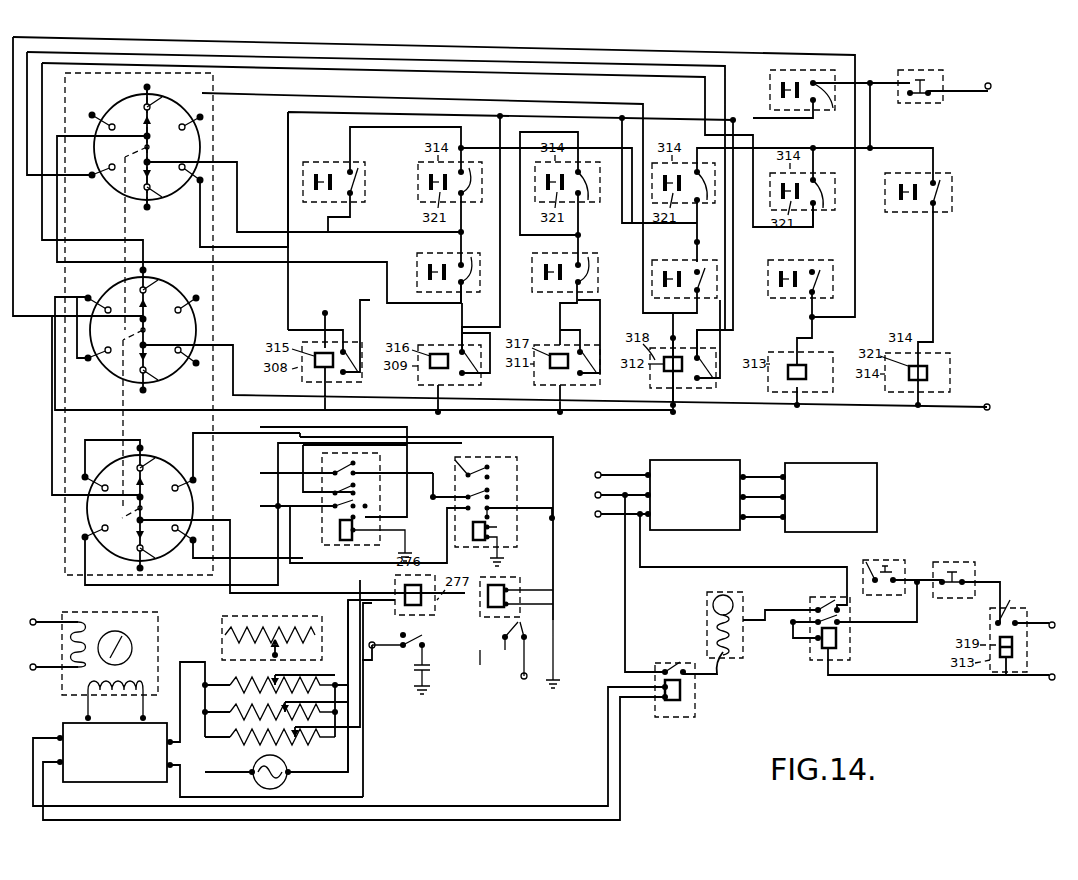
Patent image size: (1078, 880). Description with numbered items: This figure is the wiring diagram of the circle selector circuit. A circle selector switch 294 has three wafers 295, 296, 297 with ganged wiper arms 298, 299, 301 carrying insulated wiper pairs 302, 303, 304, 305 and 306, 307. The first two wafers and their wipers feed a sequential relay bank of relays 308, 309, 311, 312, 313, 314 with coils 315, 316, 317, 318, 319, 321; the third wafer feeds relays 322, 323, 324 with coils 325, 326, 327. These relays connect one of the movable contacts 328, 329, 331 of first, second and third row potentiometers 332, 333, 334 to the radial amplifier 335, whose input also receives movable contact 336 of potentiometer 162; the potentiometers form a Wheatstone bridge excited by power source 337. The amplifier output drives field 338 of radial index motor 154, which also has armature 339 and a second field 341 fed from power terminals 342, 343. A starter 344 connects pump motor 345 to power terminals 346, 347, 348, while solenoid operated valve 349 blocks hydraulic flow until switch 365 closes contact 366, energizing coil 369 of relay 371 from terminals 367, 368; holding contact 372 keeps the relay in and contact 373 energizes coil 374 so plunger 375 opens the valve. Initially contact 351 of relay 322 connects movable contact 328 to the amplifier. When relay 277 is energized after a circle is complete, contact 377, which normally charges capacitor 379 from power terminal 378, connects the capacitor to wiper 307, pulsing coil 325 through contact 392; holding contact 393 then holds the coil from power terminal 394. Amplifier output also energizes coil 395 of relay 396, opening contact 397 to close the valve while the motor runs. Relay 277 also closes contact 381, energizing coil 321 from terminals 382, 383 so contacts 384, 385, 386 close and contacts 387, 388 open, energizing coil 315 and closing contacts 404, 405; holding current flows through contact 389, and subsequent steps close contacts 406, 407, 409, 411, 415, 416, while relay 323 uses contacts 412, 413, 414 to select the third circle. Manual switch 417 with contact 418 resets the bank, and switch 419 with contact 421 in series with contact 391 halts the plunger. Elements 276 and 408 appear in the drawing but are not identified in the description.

The radial index motor 154 is at (62, 676).
The potentiometer 162 is at (222, 620).
The relay coil 276 is at (908, 208).
The relay 277 is at (938, 212).
The circle selector switch 294 is at (56, 526).
The wafer 295 is at (125, 106).
The wafer 296 is at (112, 290).
The wafer 297 is at (110, 470).
The wiper arm 298 is at (150, 148).
The wiper arm 299 is at (147, 331).
The wiper arm 301 is at (144, 508).
The wiper 302 is at (150, 130).
The wiper 303 is at (150, 172).
The wiper 304 is at (147, 314).
The wiper 305 is at (147, 352).
The wiper 306 is at (144, 492).
The wiper 307 is at (143, 527).
The relay 308 is at (466, 292).
The relay 309 is at (587, 292).
The relay 311 is at (703, 298).
The relay 312 is at (818, 268).
The relay 313 is at (780, 71).
The relay 314 is at (323, 162).
The coil 315 is at (437, 262).
The coil 316 is at (553, 262).
The coil 317 is at (672, 268).
The coil 318 is at (788, 298).
The coil 319 is at (792, 362).
The coil 321 is at (323, 192).
The relay 322 is at (325, 534).
The relay 323 is at (515, 533).
The relay 324 is at (504, 652).
The coil 325 is at (348, 540).
The coil 326 is at (475, 541).
The coil 327 is at (510, 584).
The movable contact 328 is at (270, 676).
The movable contact 329 is at (285, 704).
The movable contact 331 is at (295, 730).
The first row potentiometer 332 is at (285, 686).
The second row potentiometer 333 is at (295, 712).
The third row potentiometer 334 is at (300, 739).
The radial amplifier 335 is at (112, 782).
The movable contact 336 is at (270, 646).
The power source 337 is at (255, 762).
The field 338 is at (115, 701).
The armature 339 is at (133, 648).
The second field 341 is at (95, 638).
The power terminal 342 is at (33, 618).
The power terminal 343 is at (49, 655).
The starter 344 is at (700, 460).
The pump motor 345 is at (832, 463).
The power terminal 346 is at (601, 471).
The power terminal 347 is at (630, 574).
The power terminal 348 is at (599, 518).
The solenoid operated valve 349 is at (706, 610).
The contact 351 is at (355, 464).
The switch 365 is at (898, 560).
The contact 366 is at (870, 562).
The power terminal 367 is at (1040, 610).
The power terminal 368 is at (1050, 681).
The coil 369 is at (838, 640).
The relay 371 is at (812, 660).
The holding contact 372 is at (840, 616).
The contact 373 is at (825, 604).
The coil 374 is at (718, 636).
The plunger 375 is at (722, 660).
The contact 377 is at (424, 636).
The power terminal 378 is at (384, 667).
The capacitor 379 is at (430, 675).
The contact 381 is at (942, 193).
The power terminal 382 is at (990, 82).
The power terminal 383 is at (990, 404).
The contact 384 is at (823, 208).
The contact 385 is at (590, 200).
The contact 386 is at (357, 183).
The contact 387 is at (706, 210).
The contact 388 is at (465, 170).
The contact 389 is at (827, 105).
The contact 391 is at (1010, 618).
The contact 392 is at (350, 507).
The holding contact 393 is at (355, 485).
The power terminal 394 is at (522, 711).
The coil 395 is at (683, 695).
The relay 396 is at (675, 717).
The contact 397 is at (672, 666).
The contact 404 is at (471, 262).
The holding contact 405 is at (357, 374).
The contact 406 is at (820, 282).
The holding contact 407 is at (712, 378).
The contact 408 is at (505, 640).
The contact 409 is at (589, 262).
The holding contact 411 is at (477, 374).
The contact 412 is at (490, 508).
The holding contact 413 is at (490, 490).
The contact 414 is at (466, 472).
The contact 415 is at (705, 275).
The holding contact 416 is at (597, 374).
The manually operated switch 417 is at (918, 70).
The contact 418 is at (918, 103).
The manually operated switch 419 is at (953, 562).
The contact 421 is at (952, 590).